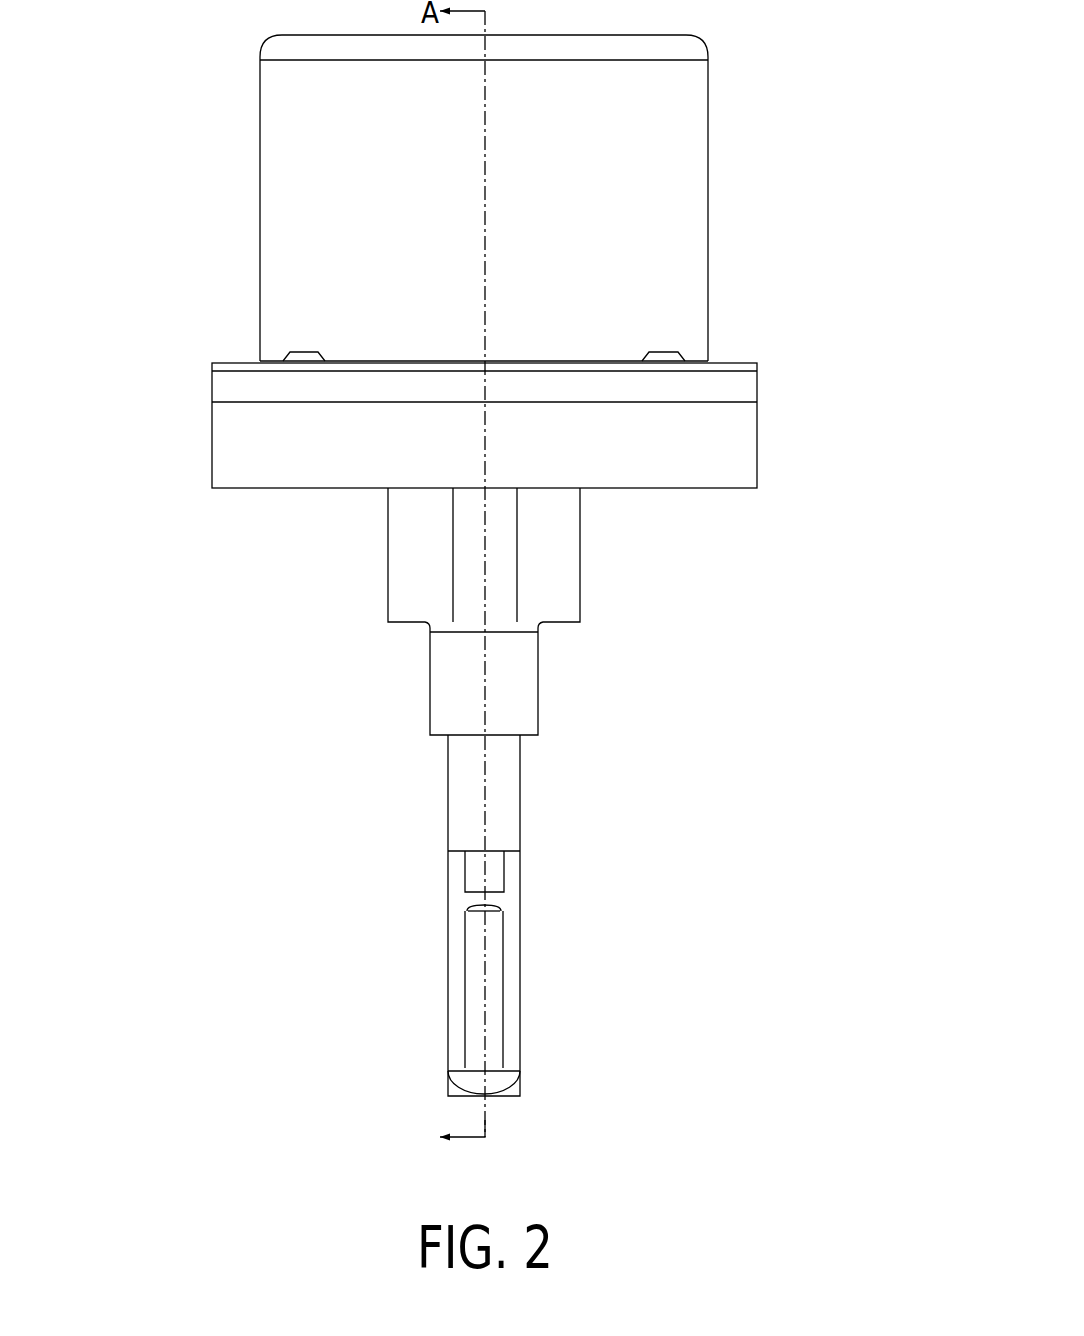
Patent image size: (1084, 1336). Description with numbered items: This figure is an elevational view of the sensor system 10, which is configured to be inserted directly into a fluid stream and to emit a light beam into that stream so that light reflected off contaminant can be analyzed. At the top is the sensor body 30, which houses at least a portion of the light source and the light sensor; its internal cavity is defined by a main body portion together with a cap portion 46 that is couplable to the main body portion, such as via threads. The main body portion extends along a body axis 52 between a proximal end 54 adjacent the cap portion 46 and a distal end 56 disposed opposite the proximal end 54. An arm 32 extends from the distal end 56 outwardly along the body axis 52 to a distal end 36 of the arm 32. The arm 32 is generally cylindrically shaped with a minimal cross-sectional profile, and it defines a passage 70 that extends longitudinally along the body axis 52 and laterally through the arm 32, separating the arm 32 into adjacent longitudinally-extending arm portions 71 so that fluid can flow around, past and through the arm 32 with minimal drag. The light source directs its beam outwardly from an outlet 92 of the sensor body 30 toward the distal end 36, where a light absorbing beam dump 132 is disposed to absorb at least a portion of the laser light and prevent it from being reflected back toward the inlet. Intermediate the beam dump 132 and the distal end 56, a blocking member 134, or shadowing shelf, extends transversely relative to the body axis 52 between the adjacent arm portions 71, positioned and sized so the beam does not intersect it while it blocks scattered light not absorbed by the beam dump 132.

The sensor system 10 is at (556, 180).
The cap portion 46 is at (708, 216).
The sensor body 30 is at (498, 432).
The proximal end 54 is at (182, 433).
The distal end 56 is at (412, 720).
The arm 32 is at (508, 800).
The outlet 92 is at (494, 858).
The passage 70 is at (470, 872).
The blocking member 134 is at (492, 900).
The arm portions 71 is at (512, 982).
The light absorbing beam dump 132 is at (493, 1085).
The distal end of the arm 36 is at (483, 1105).
The body axis 52 is at (485, 1122).